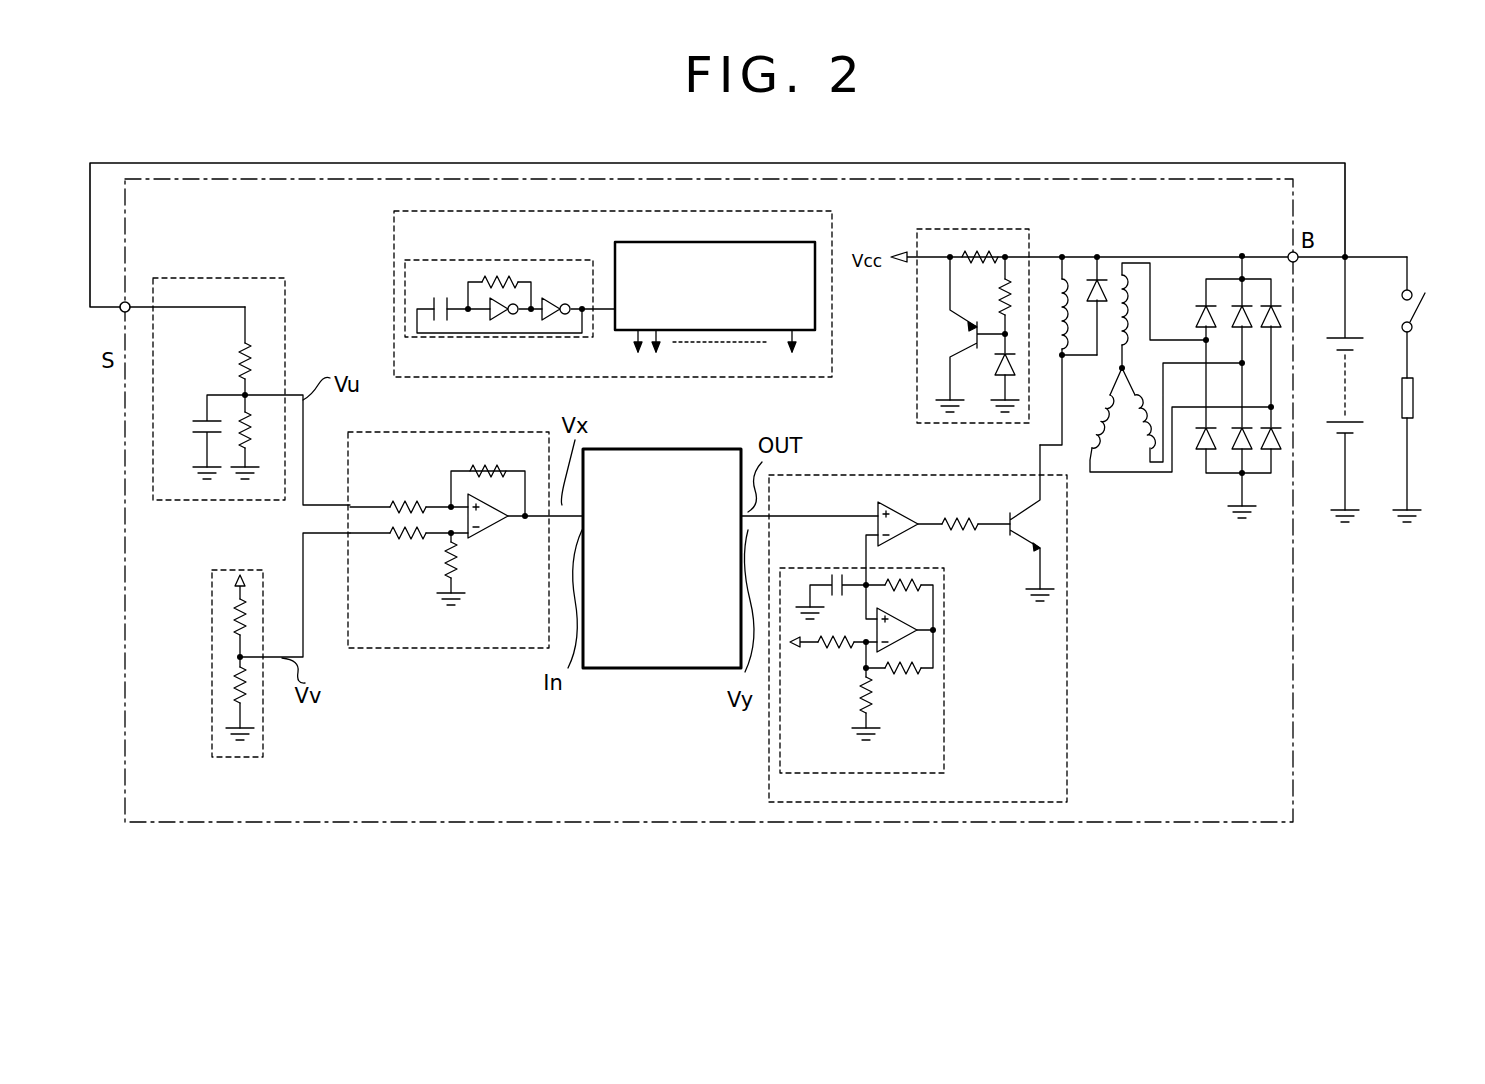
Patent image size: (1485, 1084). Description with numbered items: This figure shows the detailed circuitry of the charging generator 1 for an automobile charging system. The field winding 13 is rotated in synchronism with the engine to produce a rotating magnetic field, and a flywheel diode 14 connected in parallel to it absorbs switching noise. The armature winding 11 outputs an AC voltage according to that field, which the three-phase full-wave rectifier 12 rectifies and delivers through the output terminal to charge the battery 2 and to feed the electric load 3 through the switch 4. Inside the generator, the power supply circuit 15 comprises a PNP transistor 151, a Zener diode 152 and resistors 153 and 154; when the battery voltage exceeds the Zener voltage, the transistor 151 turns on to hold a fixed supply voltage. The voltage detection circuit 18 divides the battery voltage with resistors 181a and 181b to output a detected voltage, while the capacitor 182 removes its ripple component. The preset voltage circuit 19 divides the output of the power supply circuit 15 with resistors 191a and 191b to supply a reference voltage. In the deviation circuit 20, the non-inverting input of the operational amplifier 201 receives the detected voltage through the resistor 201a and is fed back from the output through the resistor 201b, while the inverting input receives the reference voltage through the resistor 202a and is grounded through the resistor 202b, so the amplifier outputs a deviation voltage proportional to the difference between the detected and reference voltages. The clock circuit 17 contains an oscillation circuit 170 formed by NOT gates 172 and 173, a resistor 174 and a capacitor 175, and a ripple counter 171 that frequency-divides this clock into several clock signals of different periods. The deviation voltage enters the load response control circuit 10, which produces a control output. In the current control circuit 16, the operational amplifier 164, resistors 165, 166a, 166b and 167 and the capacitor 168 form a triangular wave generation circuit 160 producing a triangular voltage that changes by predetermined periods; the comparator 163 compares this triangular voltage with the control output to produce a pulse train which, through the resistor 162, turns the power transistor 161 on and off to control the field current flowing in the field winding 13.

The charging generator 1 is at (1293, 736).
The battery 2 is at (1352, 437).
The electric load 3 is at (1414, 400).
The switch 4 is at (1427, 305).
The load response control circuit 10 is at (655, 668).
The armature winding 11 is at (1122, 472).
The three-phase full-wave rectifier 12 is at (1256, 478).
The field winding 13 is at (1060, 320).
The flywheel diode 14 is at (1100, 327).
The power supply circuit 15 is at (969, 330).
The current control circuit 16 is at (951, 623).
The clock circuit 17 is at (613, 318).
The voltage detection circuit 18 is at (250, 383).
The preset voltage circuit 19 is at (231, 660).
The deviation circuit 20 is at (465, 545).
The PNP transistor 151 is at (960, 335).
The Zener diode 152 is at (997, 378).
The resistor 153 is at (982, 250).
The resistor 154 is at (1012, 300).
The triangular wave generation circuit 160 is at (902, 652).
The power transistor 161 is at (1030, 520).
The resistor 162 is at (965, 528).
The comparator 163 is at (890, 512).
The operational amplifier 164 is at (905, 643).
The resistor 165 is at (918, 590).
The resistor 166a is at (858, 688).
The resistor 166b is at (905, 685).
The resistor 167 is at (836, 655).
The capacitor 168 is at (838, 572).
The oscillation circuit 170 is at (523, 318).
The ripple counter 171 is at (678, 242).
The NOT gate 172 is at (497, 320).
The NOT gate 173 is at (553, 321).
The resistor 174 is at (500, 276).
The capacitor 175 is at (432, 296).
The resistor 181a is at (262, 357).
The resistor 181b is at (258, 450).
The capacitor 182 is at (197, 423).
The resistor 191a is at (225, 618).
The resistor 191b is at (230, 690).
The operational amplifier 201 is at (483, 536).
The resistor 201a is at (408, 502).
The resistor 201b is at (486, 465).
The resistor 202a is at (408, 539).
The resistor 202b is at (446, 560).